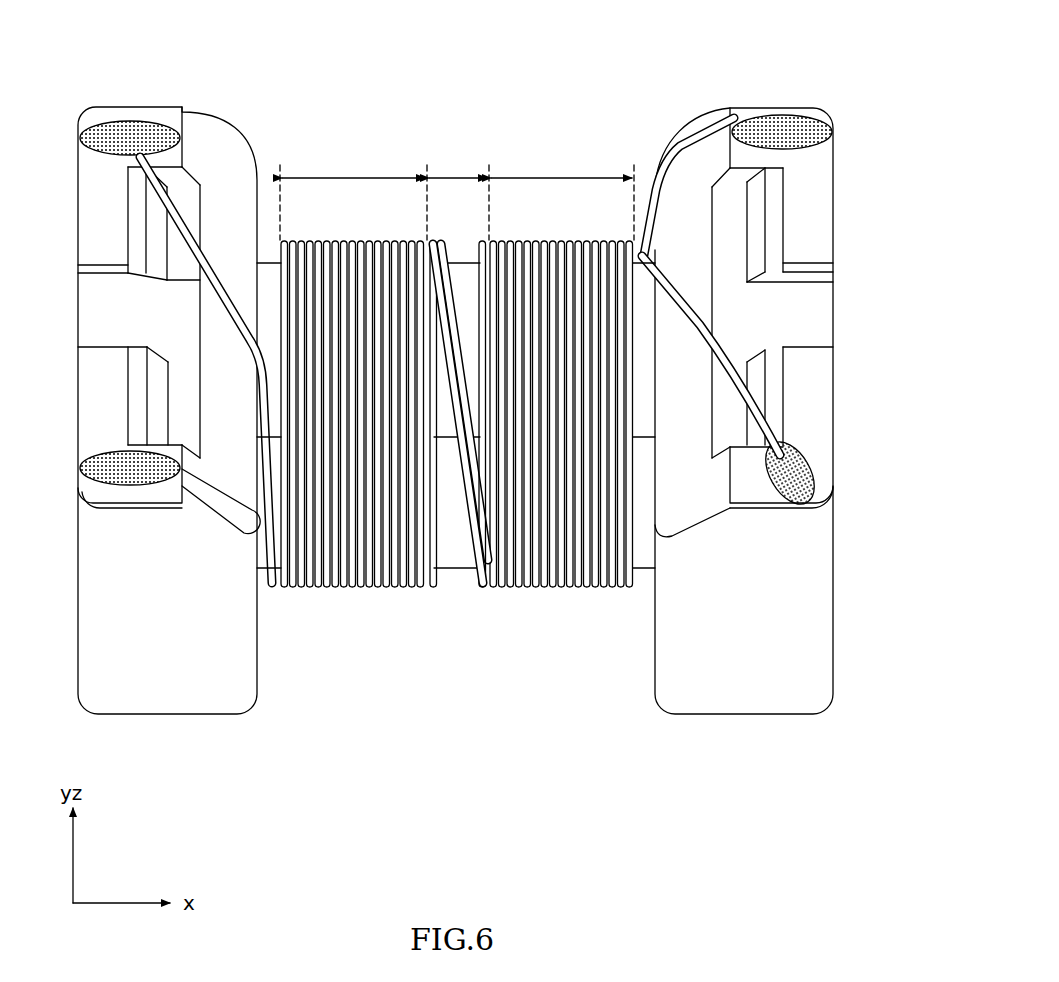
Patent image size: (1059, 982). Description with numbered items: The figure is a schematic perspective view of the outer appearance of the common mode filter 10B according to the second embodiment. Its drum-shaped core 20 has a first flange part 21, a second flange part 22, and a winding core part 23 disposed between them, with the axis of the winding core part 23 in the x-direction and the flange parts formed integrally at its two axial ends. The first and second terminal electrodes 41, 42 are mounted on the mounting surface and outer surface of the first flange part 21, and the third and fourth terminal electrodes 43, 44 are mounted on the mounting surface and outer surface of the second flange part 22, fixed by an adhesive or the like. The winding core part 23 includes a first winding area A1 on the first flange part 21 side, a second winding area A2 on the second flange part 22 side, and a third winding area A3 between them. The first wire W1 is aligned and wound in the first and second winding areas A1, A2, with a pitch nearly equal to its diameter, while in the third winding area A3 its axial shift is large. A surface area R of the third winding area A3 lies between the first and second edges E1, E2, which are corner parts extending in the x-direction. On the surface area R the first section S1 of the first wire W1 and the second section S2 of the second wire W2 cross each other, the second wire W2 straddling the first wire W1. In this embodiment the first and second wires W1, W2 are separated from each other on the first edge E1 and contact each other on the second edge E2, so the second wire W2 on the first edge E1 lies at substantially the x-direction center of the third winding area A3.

The common mode filter 10B is at (831, 34).
The drum-shaped core 20 is at (456, 445).
The first flange part 21 is at (775, 411).
The second flange part 22 is at (147, 410).
The winding core part 23 is at (455, 556).
The first terminal electrode 41 is at (820, 403).
The second terminal electrode 42 is at (820, 189).
The third terminal electrode 43 is at (97, 403).
The fourth terminal electrode 44 is at (97, 186).
The first wire W1 is at (748, 328).
The second wire W2 is at (692, 153).
The first section S1 is at (470, 355).
The second section S2 is at (447, 337).
The first edge E1 is at (450, 437).
The second edge E2 is at (468, 263).
The surface area R is at (475, 297).
The first winding area A1 is at (561, 163).
The second winding area A2 is at (353, 163).
The third winding area A3 is at (458, 163).